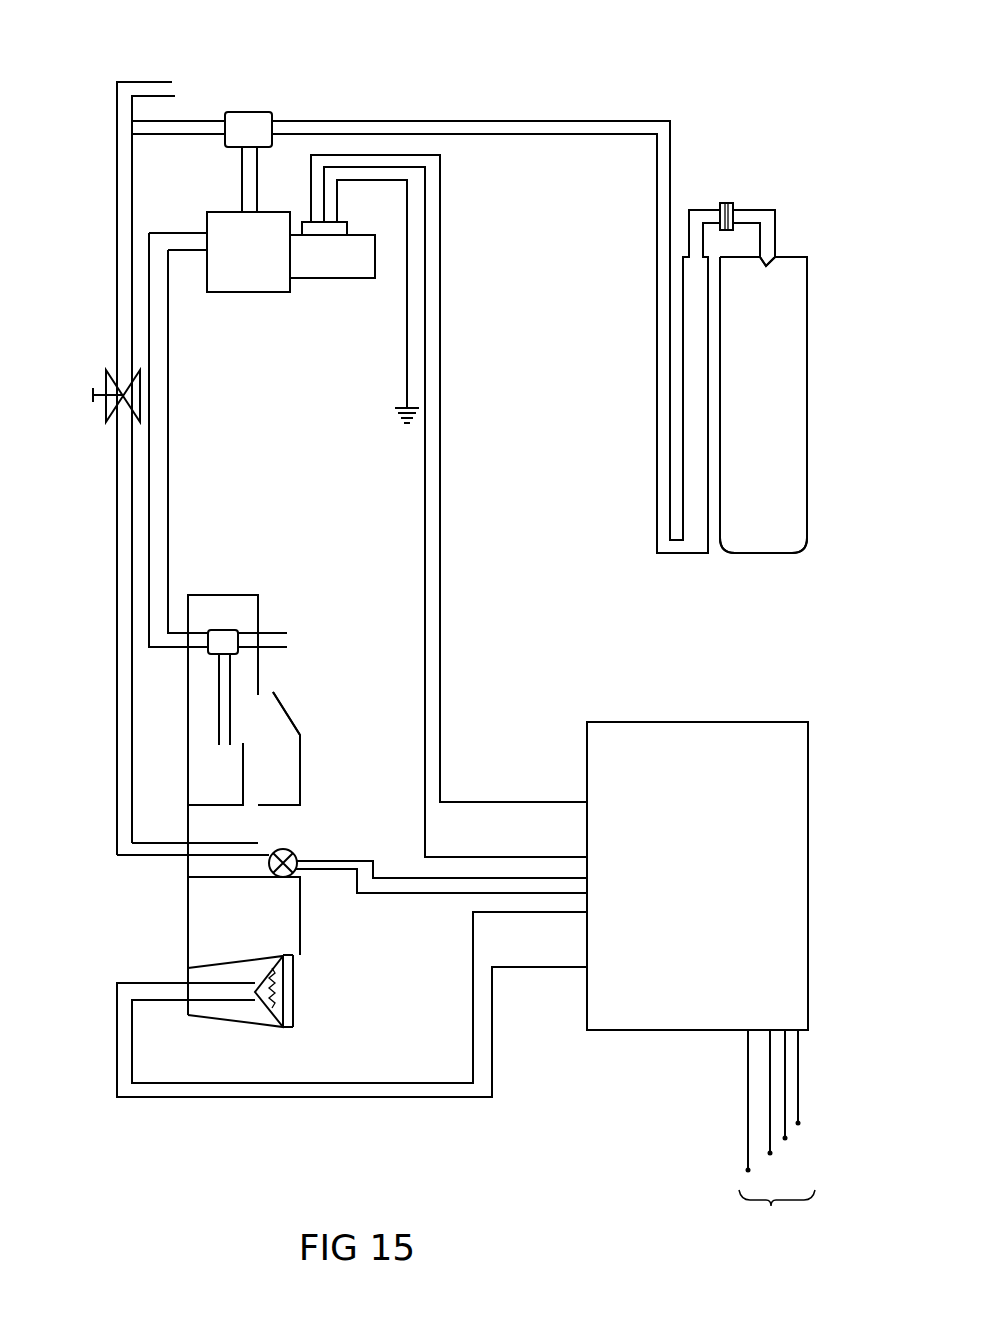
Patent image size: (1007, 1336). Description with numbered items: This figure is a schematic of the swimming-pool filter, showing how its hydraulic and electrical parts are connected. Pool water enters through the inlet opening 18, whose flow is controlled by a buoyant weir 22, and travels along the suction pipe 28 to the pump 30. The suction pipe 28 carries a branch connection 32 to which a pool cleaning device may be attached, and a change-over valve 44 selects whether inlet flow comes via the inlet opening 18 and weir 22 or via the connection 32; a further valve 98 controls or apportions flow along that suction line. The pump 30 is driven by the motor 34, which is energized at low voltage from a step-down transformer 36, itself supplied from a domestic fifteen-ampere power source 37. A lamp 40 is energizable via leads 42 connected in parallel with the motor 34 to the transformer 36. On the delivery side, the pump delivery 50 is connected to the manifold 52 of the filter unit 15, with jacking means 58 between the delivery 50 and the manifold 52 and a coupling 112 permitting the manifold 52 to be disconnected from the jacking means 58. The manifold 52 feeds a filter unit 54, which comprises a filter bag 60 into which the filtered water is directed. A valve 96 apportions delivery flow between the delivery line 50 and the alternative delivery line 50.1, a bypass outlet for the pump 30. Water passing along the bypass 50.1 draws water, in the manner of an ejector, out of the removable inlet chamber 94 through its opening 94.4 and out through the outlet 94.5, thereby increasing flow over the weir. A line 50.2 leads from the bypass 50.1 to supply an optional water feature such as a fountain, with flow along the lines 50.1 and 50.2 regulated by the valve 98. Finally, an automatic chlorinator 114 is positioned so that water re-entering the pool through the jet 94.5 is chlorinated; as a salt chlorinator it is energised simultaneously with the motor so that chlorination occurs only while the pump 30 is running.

The filter unit 15 is at (803, 241).
The inlet opening 18 is at (322, 748).
The buoyant weir 22 is at (278, 695).
The suction pipe 28 is at (163, 541).
The pump 30 is at (256, 272).
The branch connection 32 is at (291, 640).
The motor 34 is at (342, 267).
The step-down transformer 36 is at (645, 1040).
The domestic 15 Amp power source 37 is at (785, 1210).
The lamp 40 is at (295, 990).
The leads 42 is at (372, 1097).
The change-over valve 44 is at (236, 620).
The pump delivery 50 is at (497, 121).
The alternative delivery line 50.1 is at (125, 786).
The line 50.2 is at (160, 82).
The manifold 52 is at (765, 222).
The filter unit 54 is at (810, 388).
The jacking means 58 is at (722, 516).
The filter bag 60 is at (800, 487).
The inlet chamber 94 is at (267, 733).
The opening 94.4 is at (257, 796).
The outlet 94.5 is at (269, 844).
The valve 96 is at (247, 112).
The valve 98 is at (108, 418).
The coupling 112 is at (727, 203).
The automatic chlorinator 114 is at (302, 876).